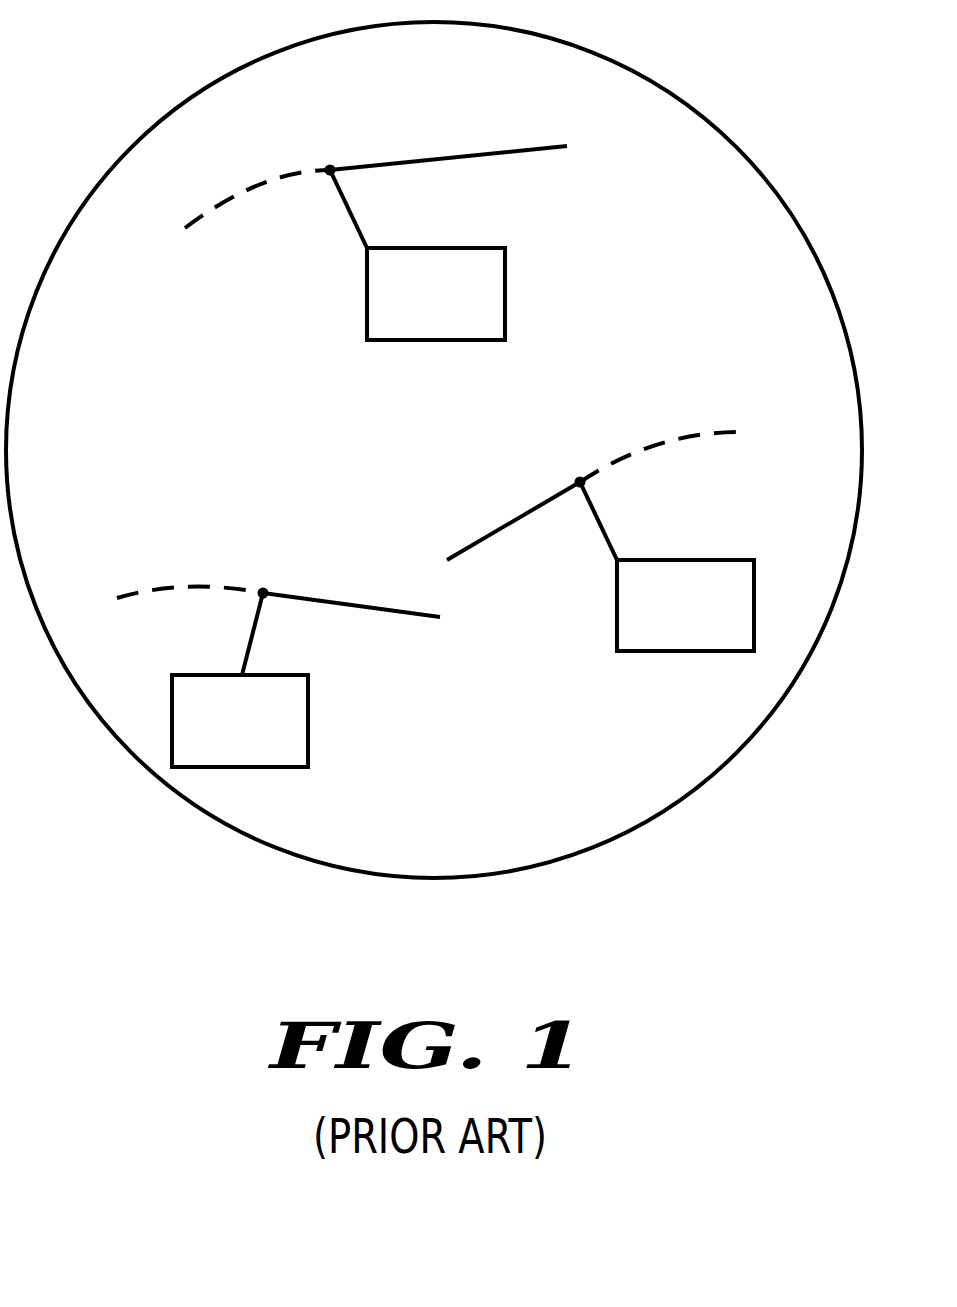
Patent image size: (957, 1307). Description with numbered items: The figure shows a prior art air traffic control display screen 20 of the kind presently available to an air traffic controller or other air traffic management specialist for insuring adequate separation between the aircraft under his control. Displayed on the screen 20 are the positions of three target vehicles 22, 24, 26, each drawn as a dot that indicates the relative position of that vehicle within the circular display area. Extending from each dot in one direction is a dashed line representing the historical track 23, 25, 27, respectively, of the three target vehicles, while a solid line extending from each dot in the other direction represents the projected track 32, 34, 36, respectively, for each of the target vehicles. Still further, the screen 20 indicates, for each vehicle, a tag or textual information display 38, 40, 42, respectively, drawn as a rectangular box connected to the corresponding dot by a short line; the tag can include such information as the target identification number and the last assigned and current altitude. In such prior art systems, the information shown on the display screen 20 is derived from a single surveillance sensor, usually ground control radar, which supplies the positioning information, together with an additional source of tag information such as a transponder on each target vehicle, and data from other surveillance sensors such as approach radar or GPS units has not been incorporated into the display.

The display screen 20 is at (718, 127).
The target vehicle 22 is at (327, 161).
The historical track 23 is at (250, 188).
The target vehicle 24 is at (578, 478).
The historical track 25 is at (687, 436).
The target vehicle 26 is at (266, 590).
The historical track 27 is at (190, 586).
The projected track 32 is at (468, 152).
The projected track 34 is at (500, 524).
The projected track 36 is at (380, 608).
The tag 38 is at (367, 304).
The tag 40 is at (686, 652).
The tag 42 is at (308, 722).